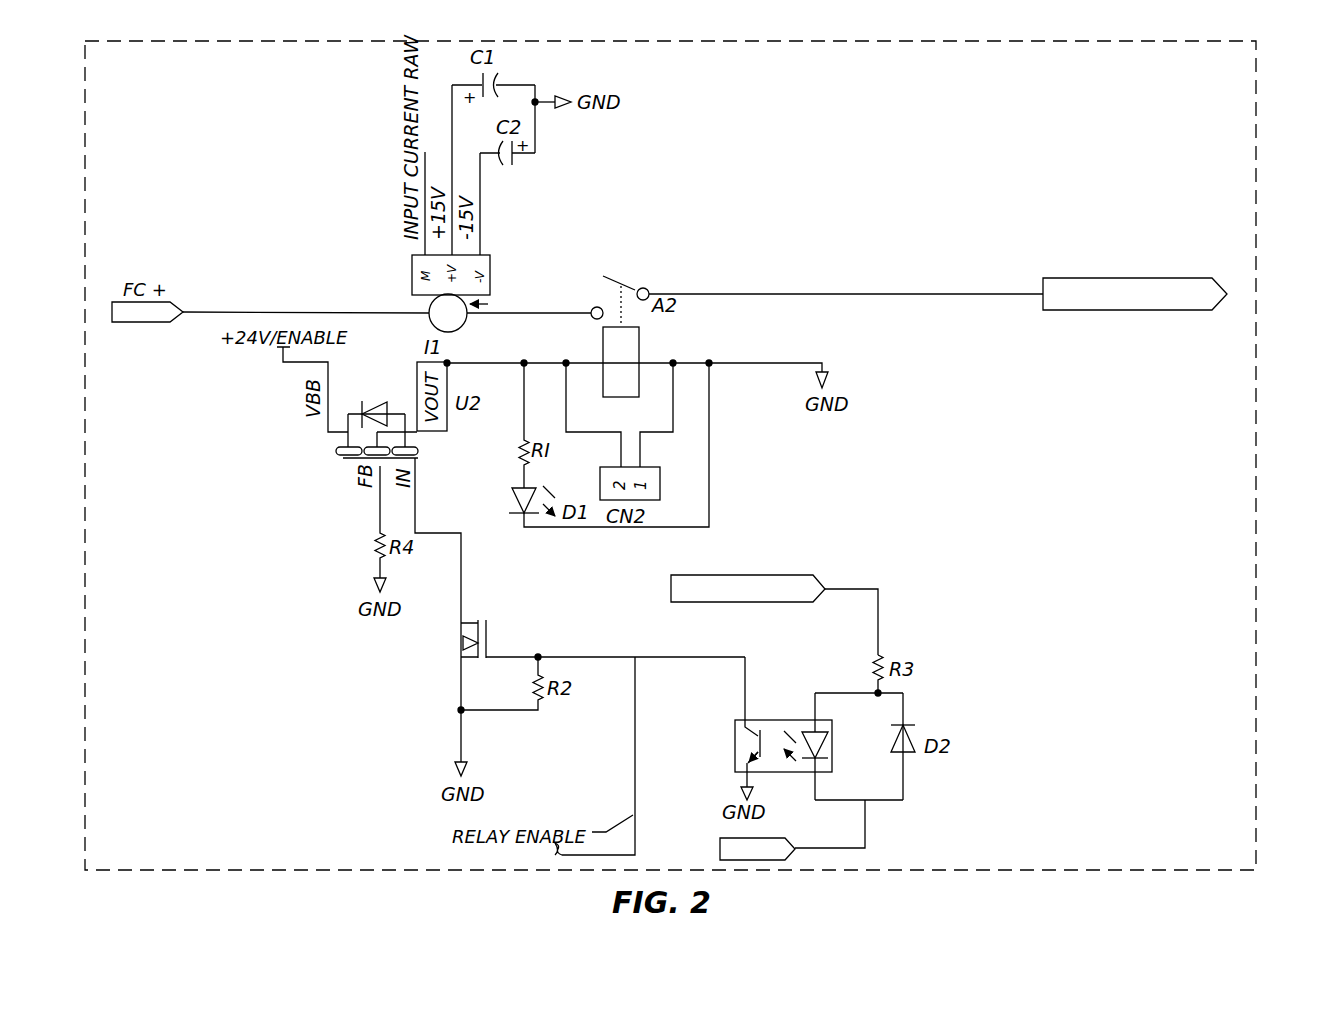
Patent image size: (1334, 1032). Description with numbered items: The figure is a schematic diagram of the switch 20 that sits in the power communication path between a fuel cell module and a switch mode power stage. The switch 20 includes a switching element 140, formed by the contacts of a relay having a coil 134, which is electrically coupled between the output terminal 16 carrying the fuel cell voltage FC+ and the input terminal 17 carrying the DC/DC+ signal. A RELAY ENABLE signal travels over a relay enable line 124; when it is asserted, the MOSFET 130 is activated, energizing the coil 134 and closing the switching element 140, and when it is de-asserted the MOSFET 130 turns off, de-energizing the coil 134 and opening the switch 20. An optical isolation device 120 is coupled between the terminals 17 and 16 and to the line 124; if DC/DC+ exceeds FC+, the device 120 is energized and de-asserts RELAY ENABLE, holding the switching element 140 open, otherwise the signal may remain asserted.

The switch 20 is at (1256, 78).
The input terminal 17 is at (897, 294).
The switching element 140 is at (629, 275).
The coil 134 is at (648, 348).
The relay enable line 124 is at (605, 657).
The metal-oxide-semiconductor field-effect-transistor (MOSFET) 130 is at (457, 640).
The optical isolation device 120 is at (768, 700).
The output terminal 16 is at (836, 850).